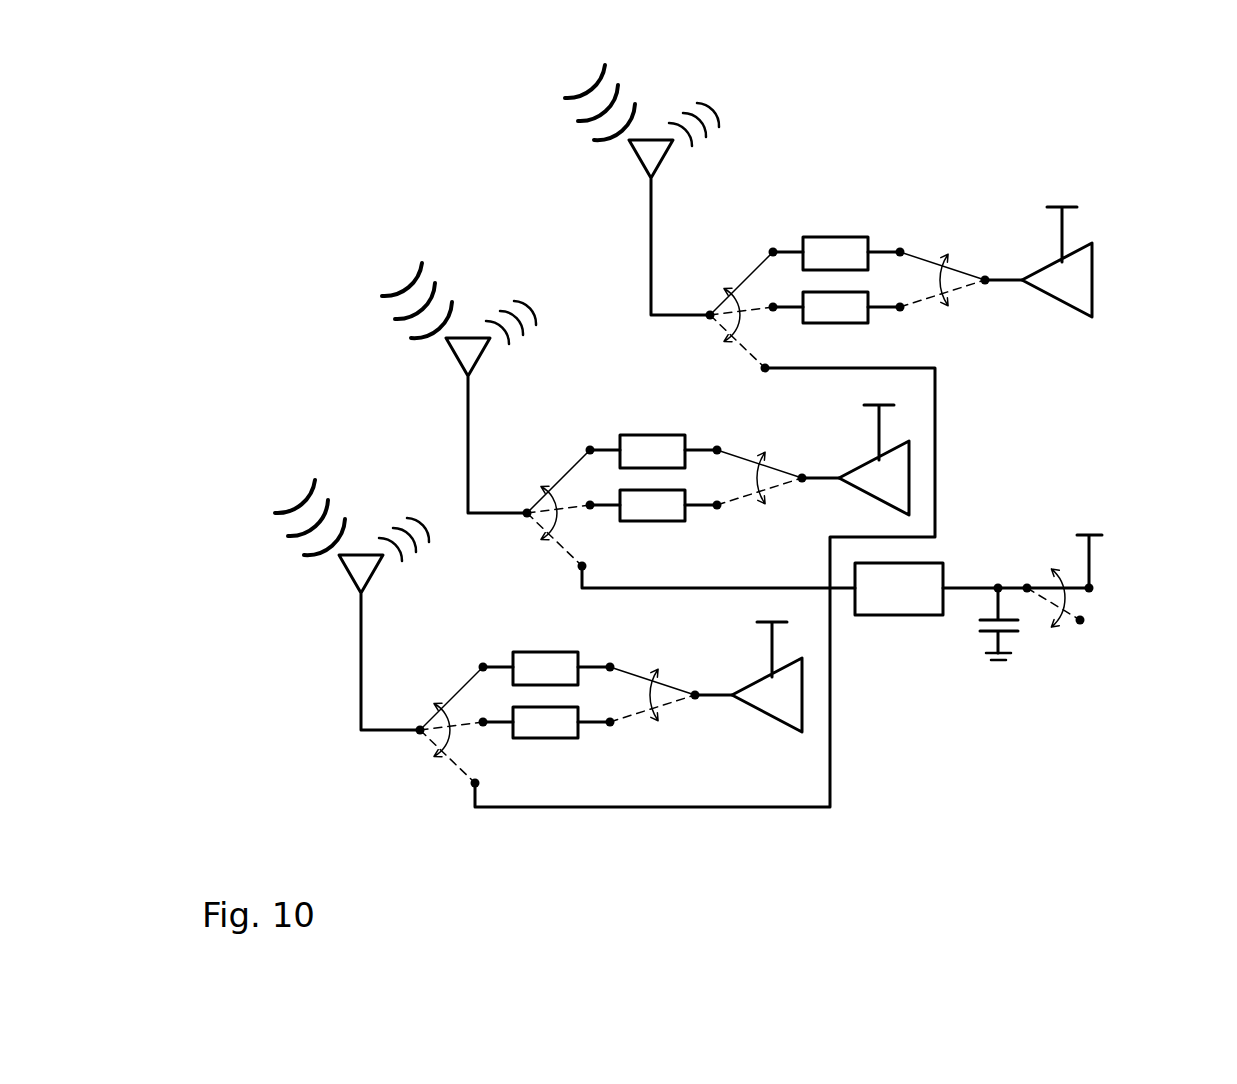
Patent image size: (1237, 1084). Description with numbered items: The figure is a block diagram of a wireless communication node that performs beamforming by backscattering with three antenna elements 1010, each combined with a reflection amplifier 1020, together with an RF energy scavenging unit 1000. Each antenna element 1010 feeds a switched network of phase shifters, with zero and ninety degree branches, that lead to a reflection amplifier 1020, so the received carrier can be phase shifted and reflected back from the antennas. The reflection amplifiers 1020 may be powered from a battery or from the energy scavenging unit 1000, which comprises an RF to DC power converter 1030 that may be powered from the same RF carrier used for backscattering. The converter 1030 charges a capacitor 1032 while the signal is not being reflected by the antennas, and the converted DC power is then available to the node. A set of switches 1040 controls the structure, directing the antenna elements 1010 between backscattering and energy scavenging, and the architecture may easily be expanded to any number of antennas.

The energy scavenging unit 1000 is at (870, 755).
The antenna elements 1010 is at (612, 190).
The reflection amplifiers 1020 is at (1104, 297).
The RF to DC power converter 1030 is at (937, 573).
The capacitor 1032 is at (994, 630).
The set of switches 1040 is at (442, 767).